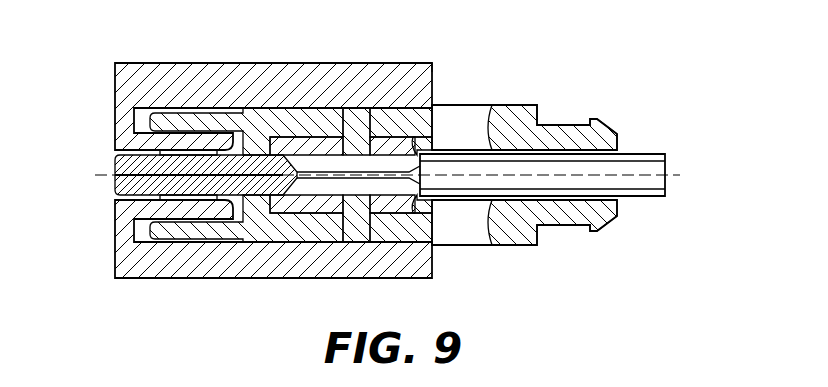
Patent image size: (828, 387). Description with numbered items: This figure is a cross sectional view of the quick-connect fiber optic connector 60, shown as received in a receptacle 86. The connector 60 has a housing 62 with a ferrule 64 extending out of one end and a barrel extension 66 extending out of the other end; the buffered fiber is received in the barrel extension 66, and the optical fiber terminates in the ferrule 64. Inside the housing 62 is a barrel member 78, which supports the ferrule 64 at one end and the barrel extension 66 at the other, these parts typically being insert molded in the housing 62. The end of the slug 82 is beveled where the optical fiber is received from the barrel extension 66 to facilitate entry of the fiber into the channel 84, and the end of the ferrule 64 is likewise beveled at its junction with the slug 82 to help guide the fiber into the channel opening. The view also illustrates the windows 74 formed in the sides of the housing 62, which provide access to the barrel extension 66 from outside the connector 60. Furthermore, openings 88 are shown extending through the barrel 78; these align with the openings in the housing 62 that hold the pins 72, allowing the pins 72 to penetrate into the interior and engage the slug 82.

The quick-connect fiber optic connector 60 is at (538, 66).
The housing 62 is at (214, 112).
The ferrule 64 is at (117, 166).
The barrel extension 66 is at (657, 162).
The pins 72 is at (414, 140).
The windows 74 is at (472, 130).
The barrel member 78 is at (302, 148).
The slug 82 is at (324, 155).
The channel 84 is at (433, 66).
The receptacle 86 is at (147, 87).
The openings 88 is at (368, 130).